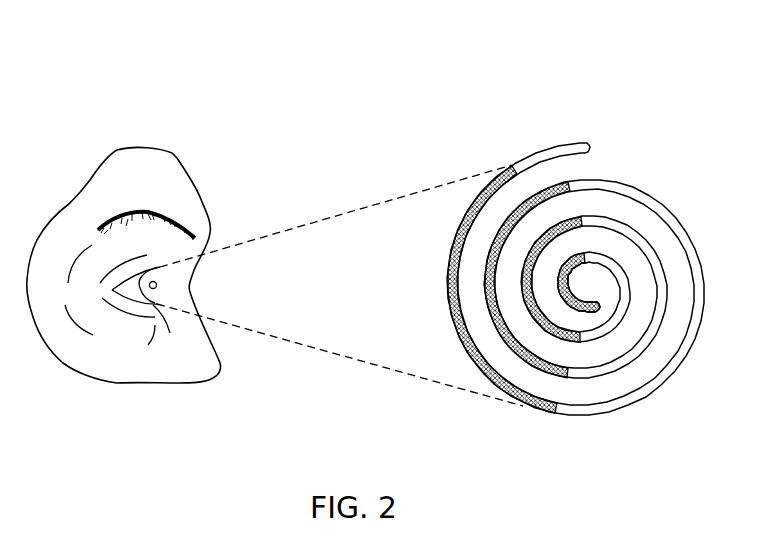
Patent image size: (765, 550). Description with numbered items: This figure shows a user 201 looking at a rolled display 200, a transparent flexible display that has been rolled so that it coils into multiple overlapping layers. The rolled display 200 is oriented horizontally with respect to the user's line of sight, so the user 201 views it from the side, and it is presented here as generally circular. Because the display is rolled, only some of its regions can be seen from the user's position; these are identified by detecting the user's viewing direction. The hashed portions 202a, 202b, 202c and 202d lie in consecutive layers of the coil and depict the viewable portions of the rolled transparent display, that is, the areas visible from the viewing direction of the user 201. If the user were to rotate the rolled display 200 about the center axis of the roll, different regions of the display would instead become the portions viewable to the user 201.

The rolled display 200 is at (724, 50).
The user 201 is at (103, 162).
The viewable portion 202a is at (470, 360).
The viewable portion 202b is at (508, 213).
The viewable portion 202c is at (542, 237).
The viewable portion 202d is at (570, 253).